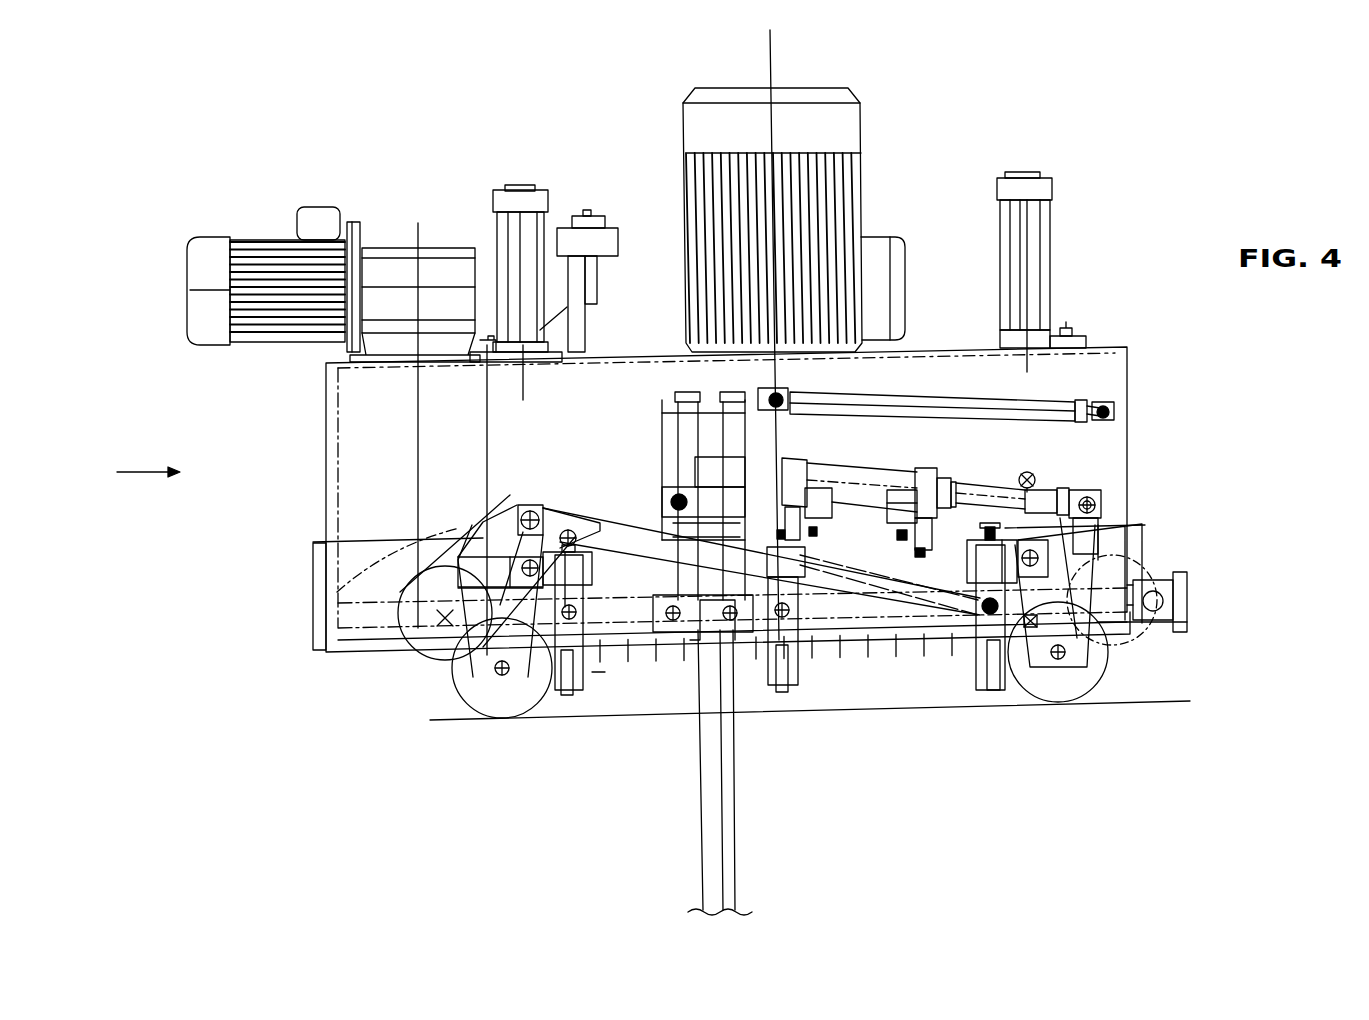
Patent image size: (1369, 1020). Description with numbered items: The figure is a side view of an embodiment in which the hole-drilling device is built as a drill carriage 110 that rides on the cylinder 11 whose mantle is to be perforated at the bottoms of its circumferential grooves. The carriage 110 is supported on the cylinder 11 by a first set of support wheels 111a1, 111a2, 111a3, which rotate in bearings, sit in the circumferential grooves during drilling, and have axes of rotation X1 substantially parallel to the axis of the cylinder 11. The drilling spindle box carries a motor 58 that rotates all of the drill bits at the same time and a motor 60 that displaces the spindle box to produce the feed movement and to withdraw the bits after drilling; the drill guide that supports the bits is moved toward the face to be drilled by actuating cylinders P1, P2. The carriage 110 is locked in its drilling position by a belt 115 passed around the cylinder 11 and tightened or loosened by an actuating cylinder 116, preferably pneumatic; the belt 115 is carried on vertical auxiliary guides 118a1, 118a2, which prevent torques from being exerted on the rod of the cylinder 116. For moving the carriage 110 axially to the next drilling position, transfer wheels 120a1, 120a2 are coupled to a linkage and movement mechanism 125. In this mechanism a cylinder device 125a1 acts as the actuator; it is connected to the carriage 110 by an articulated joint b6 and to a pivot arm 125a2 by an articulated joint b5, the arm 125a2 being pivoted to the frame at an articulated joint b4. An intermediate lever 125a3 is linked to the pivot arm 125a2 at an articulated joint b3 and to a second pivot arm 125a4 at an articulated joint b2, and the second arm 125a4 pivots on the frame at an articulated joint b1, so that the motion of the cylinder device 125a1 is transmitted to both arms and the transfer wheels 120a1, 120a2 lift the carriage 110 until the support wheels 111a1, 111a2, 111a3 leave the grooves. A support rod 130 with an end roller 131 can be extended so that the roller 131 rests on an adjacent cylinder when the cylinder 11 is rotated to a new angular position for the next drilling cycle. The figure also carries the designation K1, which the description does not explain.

The motor 58 is at (260, 252).
The motor 60 is at (682, 185).
The actuating cylinder P1 is at (515, 215).
The actuating cylinder P2 is at (1027, 198).
The support rod 130 is at (610, 228).
The end roller 131 is at (617, 262).
The drill carriage 110 is at (372, 437).
The direction of travel K1 is at (132, 468).
The vertical auxiliary guide 118a1 is at (672, 425).
The vertical auxiliary guide 118a2 is at (748, 436).
The cylinder device 125a1 is at (918, 472).
The pivot arm 125a2 is at (1140, 545).
The intermediate lever 125a3 is at (905, 600).
The second pivot arm 125a4 is at (308, 595).
The linkage and movement mechanism 125 is at (628, 590).
The articulated joint b1 is at (567, 528).
The articulated joint b2 is at (527, 506).
The articulated joint b3 is at (982, 600).
The articulated joint b4 is at (1086, 496).
The articulated joint b5 is at (1018, 583).
The articulated joint b6 is at (665, 490).
The transfer wheel 120a1 is at (470, 700).
The transfer wheel 120a2 is at (1085, 705).
The support wheel 111a1 is at (565, 698).
The support wheel 111a2 is at (785, 695).
The support wheel 111a3 is at (992, 697).
The axis of rotation of the wheels X1 is at (608, 692).
The actuating cylinder 116 is at (690, 635).
The cylinder 11 is at (1118, 704).
The belt 115 is at (742, 800).